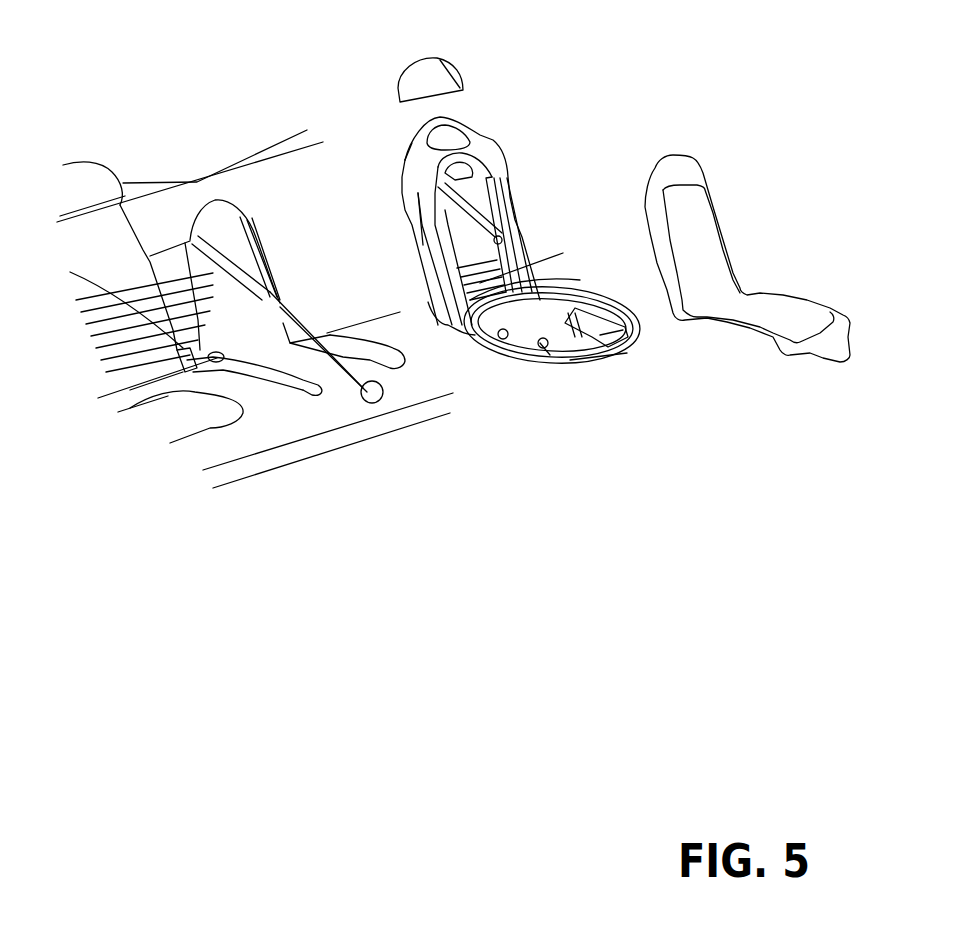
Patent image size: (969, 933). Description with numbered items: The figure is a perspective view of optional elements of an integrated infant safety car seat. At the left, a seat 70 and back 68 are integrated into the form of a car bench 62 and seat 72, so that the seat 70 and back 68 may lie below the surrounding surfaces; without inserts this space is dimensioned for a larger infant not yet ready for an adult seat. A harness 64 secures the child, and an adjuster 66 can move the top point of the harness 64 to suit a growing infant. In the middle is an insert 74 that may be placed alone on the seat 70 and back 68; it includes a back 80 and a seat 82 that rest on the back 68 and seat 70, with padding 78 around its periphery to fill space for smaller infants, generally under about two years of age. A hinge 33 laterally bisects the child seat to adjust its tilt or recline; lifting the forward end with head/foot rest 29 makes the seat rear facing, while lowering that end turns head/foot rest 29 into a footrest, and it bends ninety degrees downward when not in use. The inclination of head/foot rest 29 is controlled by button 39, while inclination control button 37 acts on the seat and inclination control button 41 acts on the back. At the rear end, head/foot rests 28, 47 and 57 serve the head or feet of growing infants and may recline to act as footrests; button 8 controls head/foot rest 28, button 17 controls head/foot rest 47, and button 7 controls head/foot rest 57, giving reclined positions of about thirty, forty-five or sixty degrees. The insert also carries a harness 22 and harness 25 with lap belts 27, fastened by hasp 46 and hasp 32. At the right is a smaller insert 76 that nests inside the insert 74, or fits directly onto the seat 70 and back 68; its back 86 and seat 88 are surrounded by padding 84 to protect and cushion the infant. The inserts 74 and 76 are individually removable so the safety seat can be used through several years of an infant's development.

The button 7 is at (468, 143).
The button 8 is at (472, 177).
The button 17 is at (460, 85).
The harness 22 is at (652, 290).
The harness 25 is at (505, 217).
The lap belts 27 is at (560, 293).
The head/foot rest 28 is at (458, 172).
The head/foot rest 29 is at (627, 353).
The hasp 32 is at (503, 230).
The hinge 33 is at (627, 330).
The inclination control button for seat 37 is at (547, 347).
The inclination control button 39 is at (623, 330).
The inclination control button for back 41 is at (423, 245).
The hasp 46 is at (575, 307).
The head/foot rest 47 is at (422, 140).
The head/foot rest 57 is at (408, 80).
The bench 62 is at (107, 233).
The harness 64 is at (270, 297).
The adjuster 66 is at (190, 240).
The back 68 is at (213, 292).
The seat 70 is at (327, 378).
The seat 72 is at (230, 437).
The insert 74 is at (489, 128).
The insert 76 is at (686, 153).
The padding 78 is at (450, 307).
The back 80 is at (475, 193).
The seat 82 is at (500, 317).
The padding 84 is at (757, 330).
The back 86 is at (697, 267).
The seat 88 is at (790, 320).